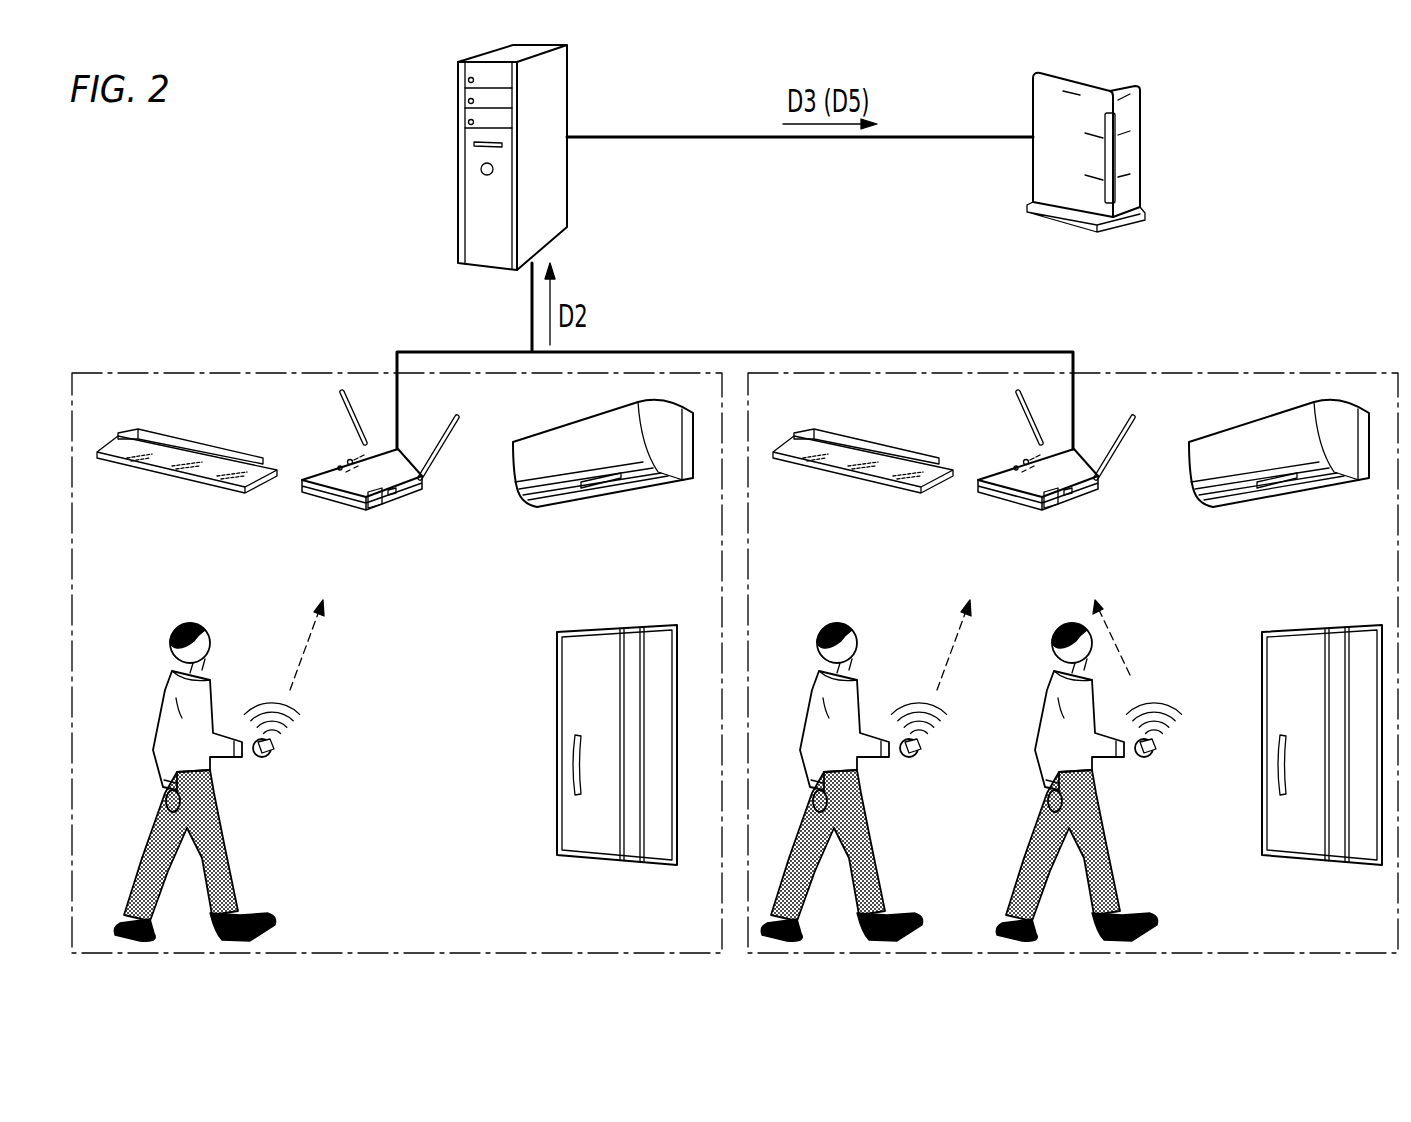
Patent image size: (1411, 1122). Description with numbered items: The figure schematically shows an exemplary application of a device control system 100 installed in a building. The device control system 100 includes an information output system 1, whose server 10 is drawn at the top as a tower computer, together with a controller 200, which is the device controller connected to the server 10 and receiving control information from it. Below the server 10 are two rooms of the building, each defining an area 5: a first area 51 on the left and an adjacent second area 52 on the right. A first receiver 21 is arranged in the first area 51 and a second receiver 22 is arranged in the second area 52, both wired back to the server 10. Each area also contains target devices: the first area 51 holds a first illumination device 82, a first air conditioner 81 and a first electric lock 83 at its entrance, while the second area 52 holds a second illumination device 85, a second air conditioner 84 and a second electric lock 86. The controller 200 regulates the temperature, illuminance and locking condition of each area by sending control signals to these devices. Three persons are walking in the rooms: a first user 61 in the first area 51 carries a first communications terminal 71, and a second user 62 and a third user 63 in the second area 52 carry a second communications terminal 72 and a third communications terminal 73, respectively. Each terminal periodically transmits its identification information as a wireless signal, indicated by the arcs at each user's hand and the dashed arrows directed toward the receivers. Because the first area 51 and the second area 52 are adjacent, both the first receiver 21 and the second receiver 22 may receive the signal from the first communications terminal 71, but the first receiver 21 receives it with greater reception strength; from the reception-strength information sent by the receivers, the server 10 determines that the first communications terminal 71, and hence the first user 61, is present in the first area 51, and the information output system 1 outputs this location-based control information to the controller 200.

The information output system 1 is at (430, 69).
The server 10 is at (462, 110).
The controller 200 is at (1135, 113).
The device control system 100 is at (122, 335).
The area 5 is at (735, 622).
The first area 51 is at (200, 372).
The second area 52 is at (1162, 372).
The first receiver 21 is at (387, 503).
The second receiver 22 is at (1063, 503).
The first air conditioner 81 is at (622, 500).
The first illumination device 82 is at (200, 480).
The first electric lock 83 is at (587, 852).
The second air conditioner 84 is at (1298, 500).
The second illumination device 85 is at (876, 480).
The second electric lock 86 is at (1300, 852).
The first user 61 is at (223, 853).
The second user 62 is at (870, 853).
The third user 63 is at (1105, 853).
The first communications terminal 71 is at (277, 745).
The second communications terminal 72 is at (924, 745).
The third communications terminal 73 is at (1159, 745).